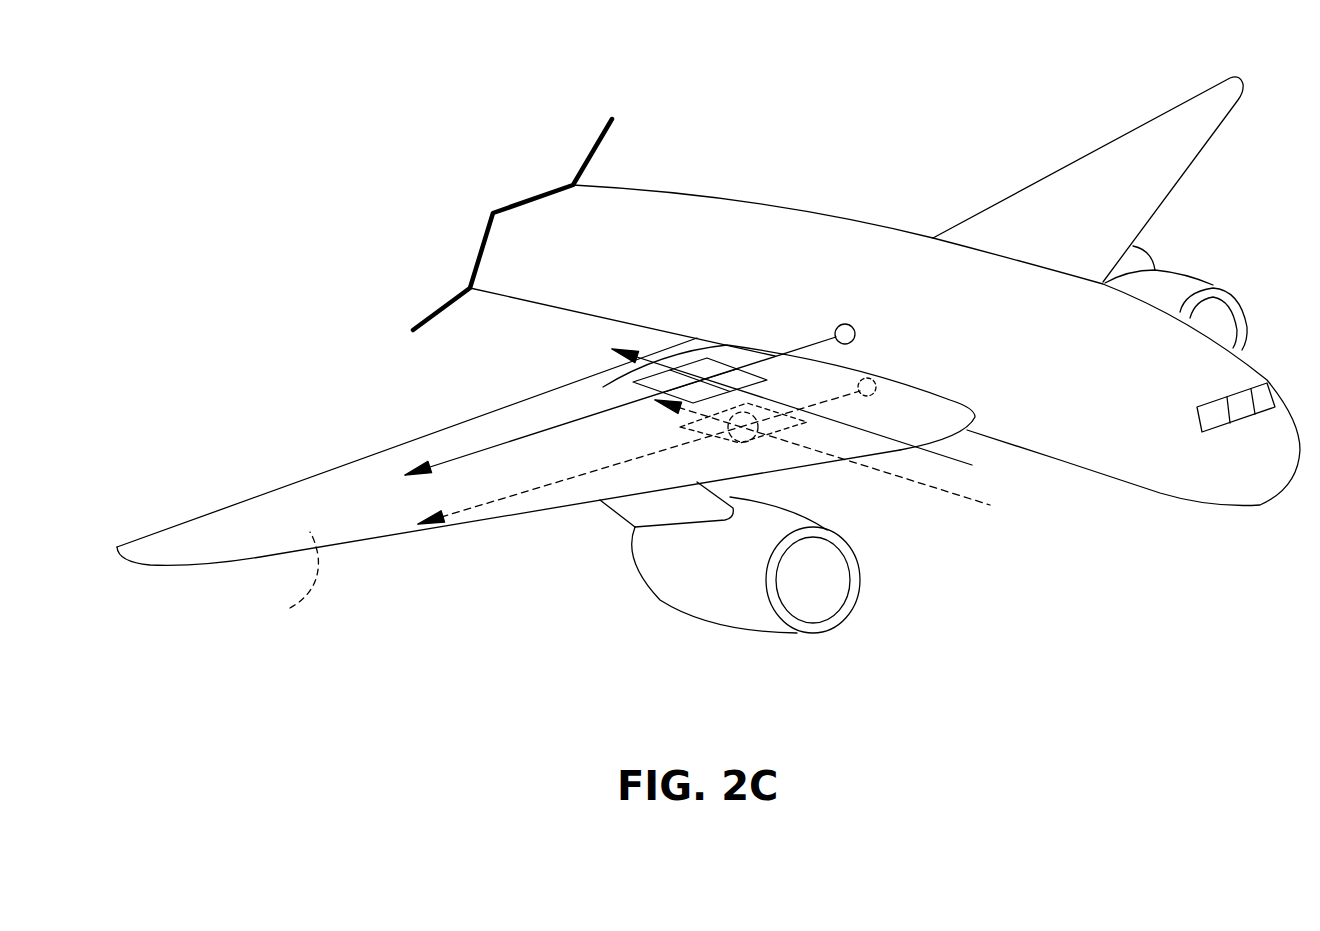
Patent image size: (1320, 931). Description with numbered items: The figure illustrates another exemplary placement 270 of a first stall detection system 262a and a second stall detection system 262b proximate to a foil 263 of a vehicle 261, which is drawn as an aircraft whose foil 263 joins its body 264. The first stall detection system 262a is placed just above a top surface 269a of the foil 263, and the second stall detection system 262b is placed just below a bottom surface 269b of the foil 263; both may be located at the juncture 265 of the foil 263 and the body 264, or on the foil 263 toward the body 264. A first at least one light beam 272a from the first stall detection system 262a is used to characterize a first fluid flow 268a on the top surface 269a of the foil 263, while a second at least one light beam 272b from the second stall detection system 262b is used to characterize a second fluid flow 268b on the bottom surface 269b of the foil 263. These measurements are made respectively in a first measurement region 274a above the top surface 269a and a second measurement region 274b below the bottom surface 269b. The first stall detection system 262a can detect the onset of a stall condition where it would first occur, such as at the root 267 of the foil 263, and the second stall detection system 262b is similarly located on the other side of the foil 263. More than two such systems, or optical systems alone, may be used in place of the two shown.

The placement 270 is at (830, 92).
The vehicle 261 is at (1100, 433).
The body 264 is at (642, 217).
The foil 263 is at (140, 560).
The top surface 269a is at (207, 533).
The bottom surface 269b is at (277, 579).
The juncture 265 is at (948, 393).
The root 267 is at (735, 355).
The first stall detection system 262a is at (848, 323).
The second stall detection system 262b is at (878, 380).
The first at least one light beam 272a is at (487, 447).
The second at least one light beam 272b is at (553, 490).
The first measurement region 274a is at (645, 383).
The second measurement region 274b is at (752, 440).
The first fluid flow 268a is at (965, 463).
The second fluid flow 268b is at (927, 483).